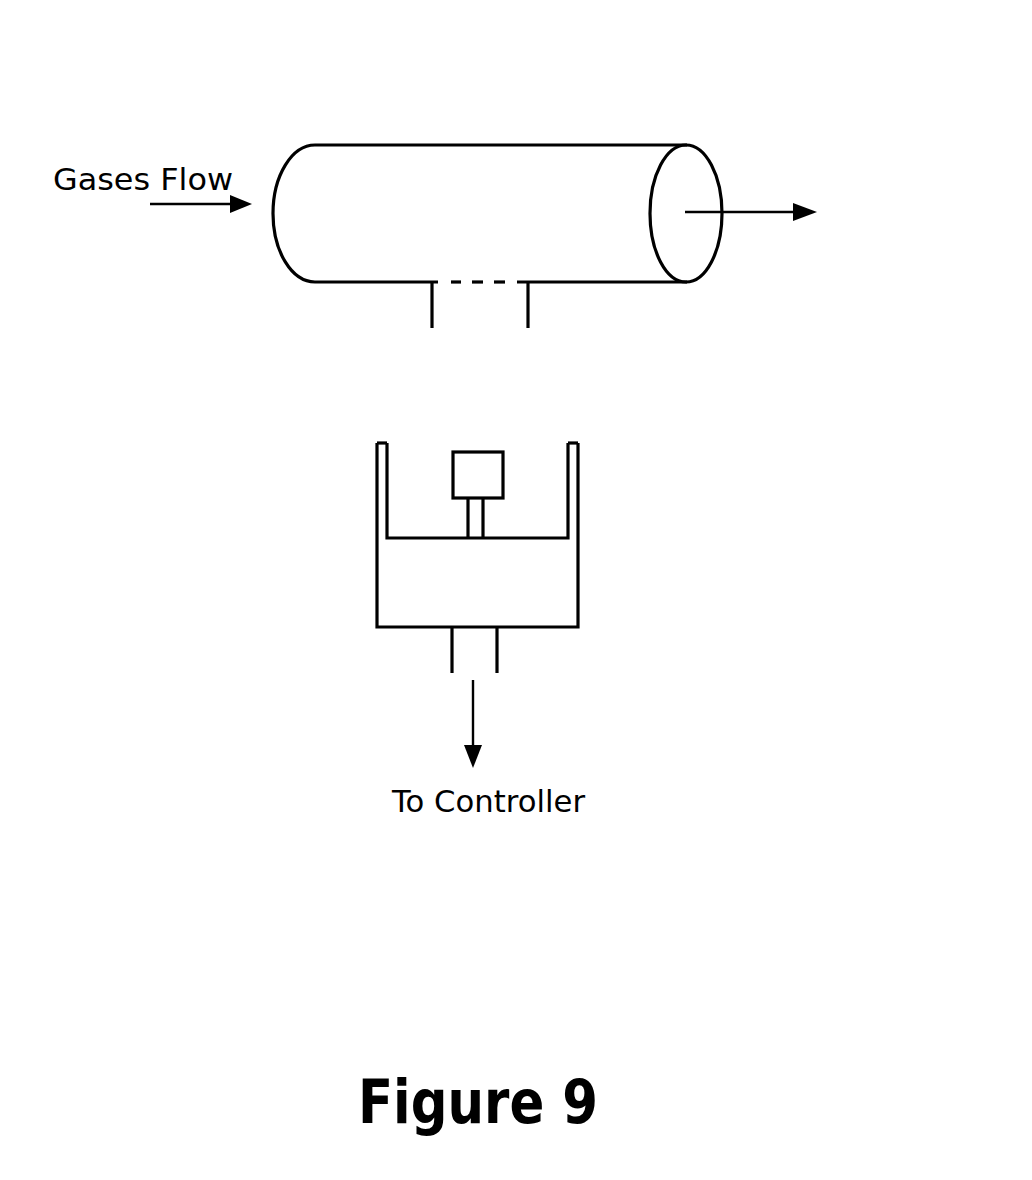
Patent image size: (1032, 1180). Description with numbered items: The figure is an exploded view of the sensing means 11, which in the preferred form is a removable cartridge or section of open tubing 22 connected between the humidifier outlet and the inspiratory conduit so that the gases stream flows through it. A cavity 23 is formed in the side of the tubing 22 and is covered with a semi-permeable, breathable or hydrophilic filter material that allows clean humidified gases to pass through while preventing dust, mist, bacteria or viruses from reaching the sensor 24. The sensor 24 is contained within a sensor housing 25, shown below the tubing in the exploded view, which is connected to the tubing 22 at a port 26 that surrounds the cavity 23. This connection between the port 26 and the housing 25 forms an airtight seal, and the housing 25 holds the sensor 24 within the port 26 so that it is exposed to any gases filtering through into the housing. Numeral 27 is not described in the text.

The sensing means 11 is at (573, 144).
The section of open tubing 22 is at (766, 163).
The cavity 23 is at (480, 316).
The sensor 24 is at (516, 478).
The sensor housing 25 is at (377, 590).
The port 26 is at (430, 312).
The membrane window 27 is at (483, 278).